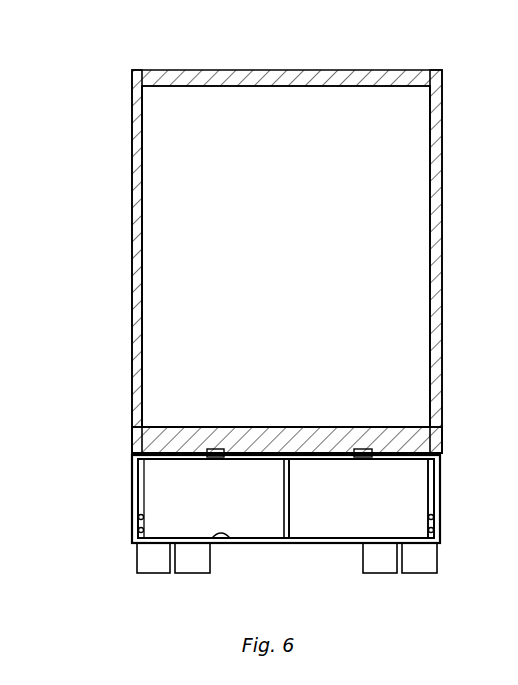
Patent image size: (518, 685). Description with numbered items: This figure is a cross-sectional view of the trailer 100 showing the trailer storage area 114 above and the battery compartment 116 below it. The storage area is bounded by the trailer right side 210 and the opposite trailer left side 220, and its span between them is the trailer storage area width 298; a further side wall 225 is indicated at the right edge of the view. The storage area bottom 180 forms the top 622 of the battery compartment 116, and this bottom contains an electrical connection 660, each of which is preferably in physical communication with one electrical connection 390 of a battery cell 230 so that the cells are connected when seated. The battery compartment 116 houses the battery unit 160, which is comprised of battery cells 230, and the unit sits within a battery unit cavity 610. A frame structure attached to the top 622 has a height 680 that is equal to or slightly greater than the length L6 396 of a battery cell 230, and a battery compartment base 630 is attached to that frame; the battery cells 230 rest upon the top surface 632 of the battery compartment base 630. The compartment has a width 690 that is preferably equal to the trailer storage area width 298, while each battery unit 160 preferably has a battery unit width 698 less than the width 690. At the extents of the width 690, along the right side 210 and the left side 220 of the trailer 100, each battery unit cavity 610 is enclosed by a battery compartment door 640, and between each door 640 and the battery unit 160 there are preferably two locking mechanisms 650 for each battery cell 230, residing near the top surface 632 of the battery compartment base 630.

The trailer 100 is at (86, 80).
The trailer storage area 114 is at (286, 256).
The battery compartment 116 is at (328, 548).
The battery unit 160 is at (356, 498).
The battery cell 230 is at (358, 498).
The storage area bottom 180 is at (300, 452).
The top of the battery compartment 622 is at (287, 440).
The trailer right side 210 is at (442, 192).
The trailer left side 220 is at (131, 192).
The side wall 225 is at (517, 420).
The trailer storage area width 298 is at (442, 64).
The electrical connection 390 is at (243, 452).
The length L6 396 is at (175, 500).
The battery unit cavity 610 is at (130, 468).
The battery compartment base 630 is at (342, 548).
The top surface 632 is at (222, 540).
The battery compartment door 640 is at (130, 492).
The locking mechanism 650 is at (135, 536).
The electrical connection 660 is at (216, 448).
The height 680 is at (257, 459).
The width of the battery compartment 690 is at (428, 518).
The battery unit width 698 is at (428, 480).